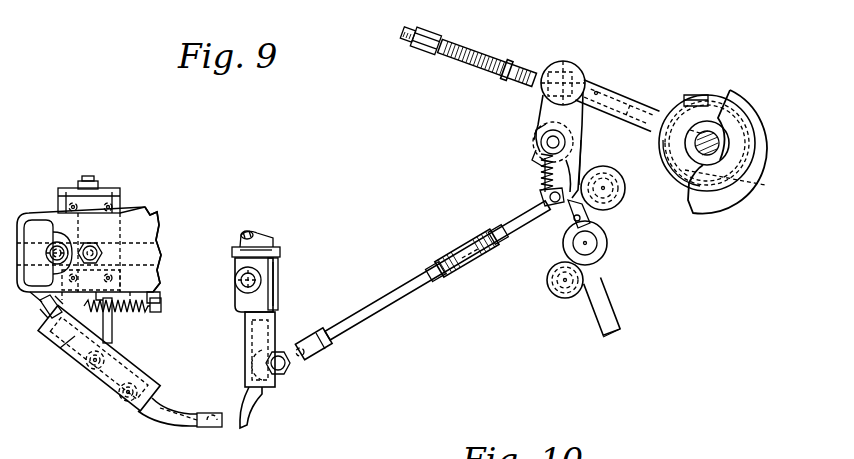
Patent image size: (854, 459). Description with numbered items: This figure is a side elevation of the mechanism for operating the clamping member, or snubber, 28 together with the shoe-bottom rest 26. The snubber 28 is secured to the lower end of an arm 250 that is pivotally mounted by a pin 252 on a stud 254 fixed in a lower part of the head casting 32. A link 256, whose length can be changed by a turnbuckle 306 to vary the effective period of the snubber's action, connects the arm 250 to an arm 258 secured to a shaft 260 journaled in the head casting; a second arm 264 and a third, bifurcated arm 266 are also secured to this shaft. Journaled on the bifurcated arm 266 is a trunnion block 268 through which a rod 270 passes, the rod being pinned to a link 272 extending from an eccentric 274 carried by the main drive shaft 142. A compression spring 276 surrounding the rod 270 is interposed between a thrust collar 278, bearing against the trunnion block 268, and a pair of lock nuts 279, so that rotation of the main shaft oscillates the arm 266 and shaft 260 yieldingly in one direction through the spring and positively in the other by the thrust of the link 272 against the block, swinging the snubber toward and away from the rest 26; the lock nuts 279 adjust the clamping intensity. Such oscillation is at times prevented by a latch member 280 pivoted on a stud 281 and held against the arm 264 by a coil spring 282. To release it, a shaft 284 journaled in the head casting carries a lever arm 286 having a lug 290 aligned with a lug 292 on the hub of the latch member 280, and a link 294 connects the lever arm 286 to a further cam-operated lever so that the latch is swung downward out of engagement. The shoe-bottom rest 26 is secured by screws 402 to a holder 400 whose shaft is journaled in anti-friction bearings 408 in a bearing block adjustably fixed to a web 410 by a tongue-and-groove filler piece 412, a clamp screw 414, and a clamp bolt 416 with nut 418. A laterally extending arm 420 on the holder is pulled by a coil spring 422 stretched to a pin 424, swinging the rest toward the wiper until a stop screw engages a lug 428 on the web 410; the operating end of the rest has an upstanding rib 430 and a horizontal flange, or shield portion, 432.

The tongue-and-groove filler piece 412 is at (22, 213).
The anti-friction bearings 408 is at (118, 195).
The web 410 is at (140, 212).
The nut 418 is at (104, 247).
The clamp bolt 416 is at (100, 254).
The lug 428 is at (160, 296).
The pin 424 is at (161, 305).
The coil spring 422 is at (135, 313).
The holder 400 is at (112, 342).
The clamp screw 414 is at (42, 302).
The laterally extending arm 420 is at (56, 329).
The screws 402 is at (118, 400).
The shoe-bottom rest 26 is at (166, 424).
The upstanding rib 430 is at (200, 413).
The flange, or shield portion 432 is at (215, 428).
The head casting 32 is at (281, 251).
The stud 254 is at (263, 233).
The pin 252 is at (246, 279).
The arm 250 is at (245, 341).
The clamping member, or snubber 28 is at (262, 400).
The link 256 is at (383, 322).
The turnbuckle 306 is at (468, 268).
The lock nuts 279 is at (434, 30).
The compression spring 276 is at (504, 59).
The rod 270 is at (511, 62).
The thrust collar 278 is at (568, 68).
The trunnion block 268 is at (589, 79).
The bifurcated arm 266 is at (536, 108).
The shaft 260 is at (543, 140).
The coil spring 282 is at (542, 176).
The latch member 280 is at (539, 192).
The arm 258 is at (582, 150).
The second arm 264 is at (606, 168).
The stud 281 is at (624, 196).
The link 272 is at (622, 99).
The eccentric 274 is at (687, 95).
The main drive shaft 142 is at (716, 140).
The lug 292 is at (604, 238).
The shaft 284 is at (595, 250).
The lever arm 286 is at (549, 274).
The lug 290 is at (573, 217).
The link 294 is at (614, 316).